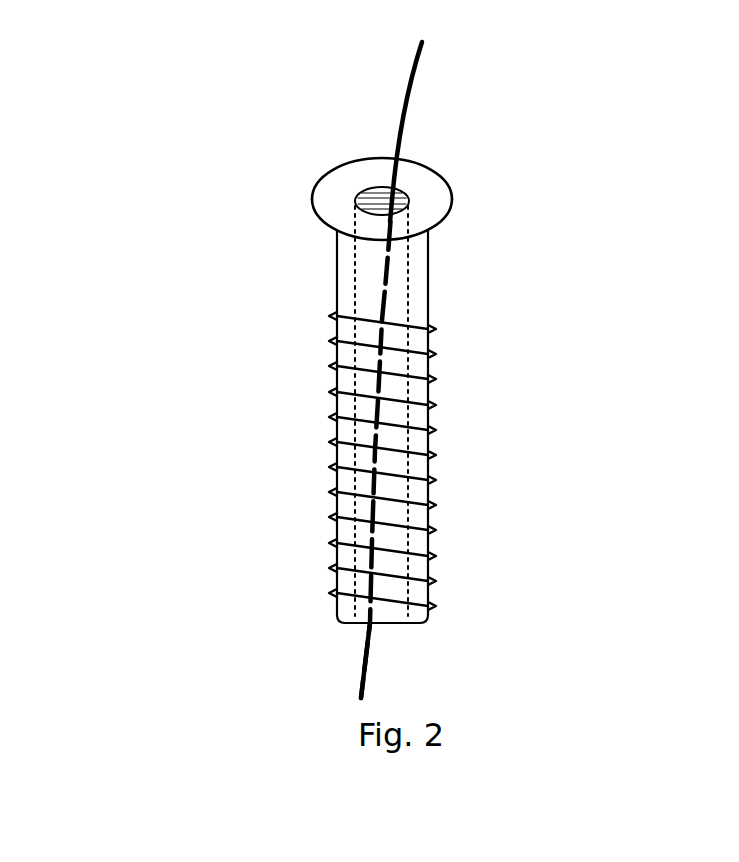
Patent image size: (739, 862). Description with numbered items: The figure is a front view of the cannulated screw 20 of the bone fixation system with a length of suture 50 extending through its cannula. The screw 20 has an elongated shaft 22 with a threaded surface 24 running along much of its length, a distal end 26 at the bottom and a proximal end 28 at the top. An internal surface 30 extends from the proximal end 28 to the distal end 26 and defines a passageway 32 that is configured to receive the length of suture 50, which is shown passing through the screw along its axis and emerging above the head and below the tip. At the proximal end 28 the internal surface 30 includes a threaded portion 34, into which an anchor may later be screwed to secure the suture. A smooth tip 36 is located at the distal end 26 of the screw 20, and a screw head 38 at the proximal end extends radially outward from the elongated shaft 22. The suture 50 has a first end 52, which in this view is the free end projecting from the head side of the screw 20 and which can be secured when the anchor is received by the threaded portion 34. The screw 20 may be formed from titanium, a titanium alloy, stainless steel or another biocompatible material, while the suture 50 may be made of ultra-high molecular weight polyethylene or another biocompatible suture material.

The screw 20 is at (620, 408).
The elongated shaft 22 is at (337, 282).
The threaded surface 24 is at (333, 413).
The distal end 26 is at (277, 667).
The proximal end 28 is at (173, 180).
The internal surface 30 is at (355, 202).
The passageway 32 is at (368, 188).
The threaded portion 34 is at (407, 193).
The smooth tip 36 is at (425, 618).
The screw head 38 is at (443, 223).
The length of suture 50 is at (418, 60).
The first end 52 is at (397, 53).